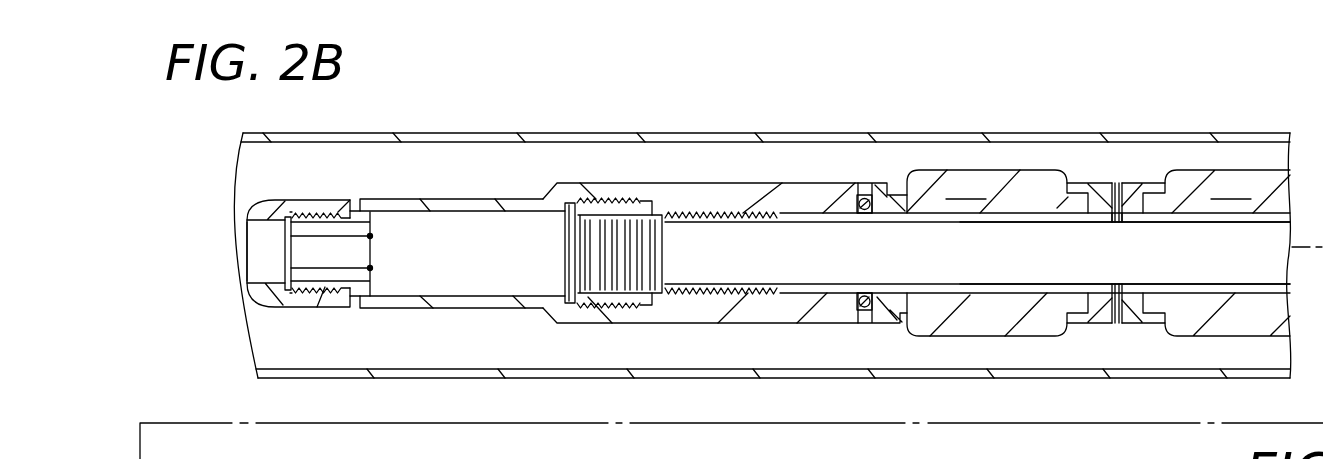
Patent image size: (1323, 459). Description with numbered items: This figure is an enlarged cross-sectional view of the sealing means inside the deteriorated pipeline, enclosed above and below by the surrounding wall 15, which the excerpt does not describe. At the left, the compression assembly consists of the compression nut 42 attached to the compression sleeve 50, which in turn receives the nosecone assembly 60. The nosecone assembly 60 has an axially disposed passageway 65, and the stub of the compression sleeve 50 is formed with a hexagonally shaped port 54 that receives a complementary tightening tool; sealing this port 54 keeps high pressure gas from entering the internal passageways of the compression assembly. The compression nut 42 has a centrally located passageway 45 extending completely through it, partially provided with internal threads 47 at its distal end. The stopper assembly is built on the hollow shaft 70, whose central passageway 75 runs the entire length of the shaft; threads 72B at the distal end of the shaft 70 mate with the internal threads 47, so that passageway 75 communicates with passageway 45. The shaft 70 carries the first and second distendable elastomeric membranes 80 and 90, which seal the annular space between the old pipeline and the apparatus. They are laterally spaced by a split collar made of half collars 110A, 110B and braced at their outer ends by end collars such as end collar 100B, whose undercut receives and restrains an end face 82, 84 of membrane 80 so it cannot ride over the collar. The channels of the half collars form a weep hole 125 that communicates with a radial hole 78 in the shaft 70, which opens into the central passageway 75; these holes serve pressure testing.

The housing 15 is at (597, 134).
The compression nut 42 is at (752, 192).
The passageway 45 is at (636, 253).
The internal threads 47 is at (651, 212).
The compression sleeve 50 is at (467, 201).
The hexagonally shaped port 54 is at (352, 252).
The nosecone assembly 60 is at (303, 200).
The passageway 65 is at (243, 250).
The hollow shaft 70 is at (800, 286).
The threads 72B is at (673, 214).
The passageway 75 is at (985, 248).
The radial hole 78 is at (1122, 230).
The first distendable elastomeric membrane 80 is at (987, 253).
The end face 82 is at (891, 293).
The end face 84 is at (917, 288).
The second distendable elastomeric membrane 90 is at (1227, 253).
The end collar 100B is at (887, 190).
The ring 110A is at (1158, 187).
The ring 110B is at (1077, 186).
The weep hole 125 is at (1120, 170).